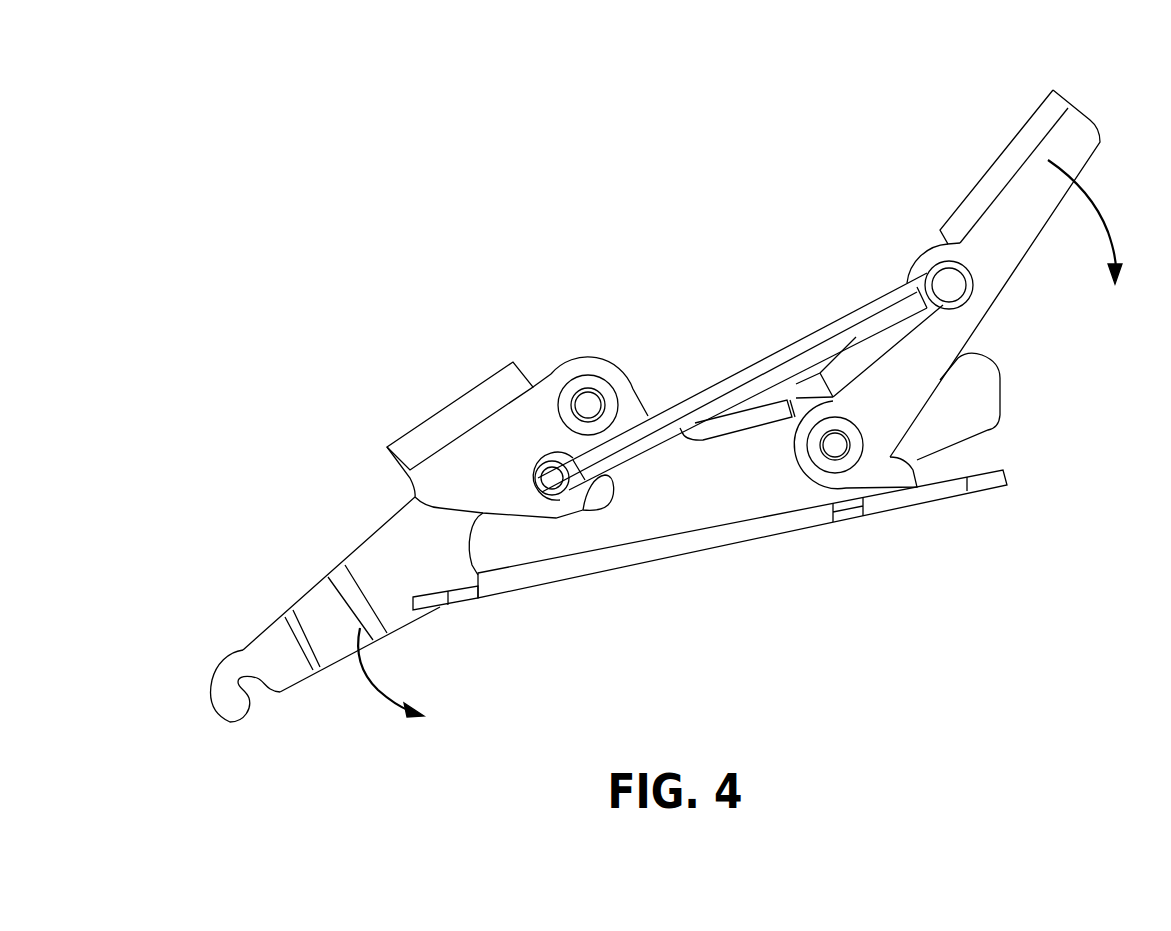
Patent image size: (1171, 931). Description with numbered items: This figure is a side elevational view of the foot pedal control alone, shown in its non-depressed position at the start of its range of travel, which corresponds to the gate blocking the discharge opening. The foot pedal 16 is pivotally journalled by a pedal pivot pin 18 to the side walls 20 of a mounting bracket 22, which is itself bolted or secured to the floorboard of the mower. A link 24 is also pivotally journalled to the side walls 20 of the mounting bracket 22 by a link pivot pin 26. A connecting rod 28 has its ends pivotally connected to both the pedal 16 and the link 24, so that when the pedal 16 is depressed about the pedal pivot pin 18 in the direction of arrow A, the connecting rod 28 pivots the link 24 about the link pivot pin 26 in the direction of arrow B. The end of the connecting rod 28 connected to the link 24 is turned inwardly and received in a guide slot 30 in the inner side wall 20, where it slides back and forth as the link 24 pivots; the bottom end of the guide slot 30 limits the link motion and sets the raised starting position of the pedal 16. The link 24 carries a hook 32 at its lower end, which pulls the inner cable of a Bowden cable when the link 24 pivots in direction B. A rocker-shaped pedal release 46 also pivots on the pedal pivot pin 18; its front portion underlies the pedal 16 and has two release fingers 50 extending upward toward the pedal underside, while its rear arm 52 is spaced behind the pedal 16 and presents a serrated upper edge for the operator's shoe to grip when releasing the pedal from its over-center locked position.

The foot pedal 16 is at (1024, 123).
The pedal pivot pin 18 is at (838, 446).
The side walls 20 is at (617, 518).
The mounting bracket 22 is at (697, 542).
The link 24 is at (464, 404).
The link pivot pin 26 is at (588, 405).
The connecting rod 28 is at (755, 376).
The guide slot 30 is at (614, 483).
The hook 32 is at (244, 710).
The pedal release 46 is at (733, 352).
The release fingers 50 is at (980, 381).
The rear arm 52 is at (737, 421).
The arrow A is at (1085, 195).
The arrow B is at (373, 670).